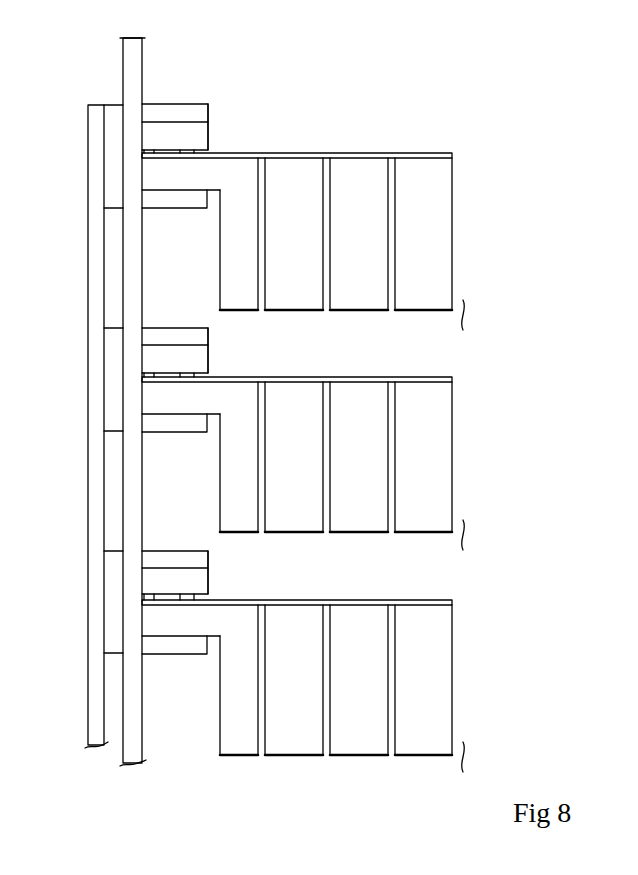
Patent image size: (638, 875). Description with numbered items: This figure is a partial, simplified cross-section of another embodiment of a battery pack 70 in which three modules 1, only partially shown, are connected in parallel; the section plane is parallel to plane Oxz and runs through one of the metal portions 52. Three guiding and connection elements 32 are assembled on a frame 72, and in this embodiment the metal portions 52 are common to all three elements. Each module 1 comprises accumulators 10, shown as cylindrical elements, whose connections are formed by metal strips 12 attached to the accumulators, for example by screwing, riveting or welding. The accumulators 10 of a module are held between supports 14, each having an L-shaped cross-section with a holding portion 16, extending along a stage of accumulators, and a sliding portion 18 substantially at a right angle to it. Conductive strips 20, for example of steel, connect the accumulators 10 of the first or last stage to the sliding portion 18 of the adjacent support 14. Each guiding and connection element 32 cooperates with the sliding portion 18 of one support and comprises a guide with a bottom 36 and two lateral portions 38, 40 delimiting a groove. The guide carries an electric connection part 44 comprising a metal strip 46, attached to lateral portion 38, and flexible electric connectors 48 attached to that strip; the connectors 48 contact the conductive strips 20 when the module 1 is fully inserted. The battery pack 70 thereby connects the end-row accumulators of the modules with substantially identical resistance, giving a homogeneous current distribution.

The module 1 is at (312, 431).
The accumulator 10 is at (313, 165).
The metal strip 12 is at (418, 153).
The support 14 is at (213, 250).
The holding portion 16 is at (200, 456).
The sliding portion 18 is at (157, 182).
The conductive strip 20 is at (297, 348).
The guiding and connection element 32 is at (229, 324).
The bottom 36 is at (112, 126).
The lateral portion 38 is at (197, 112).
The lateral portion 40 is at (183, 198).
The electric connection part 44 is at (214, 140).
The metal strip 46 is at (200, 130).
The flexible electric connector 48 is at (182, 153).
The metal portion 52 is at (133, 55).
The battery pack 70 is at (452, 58).
The frame 72 is at (90, 186).